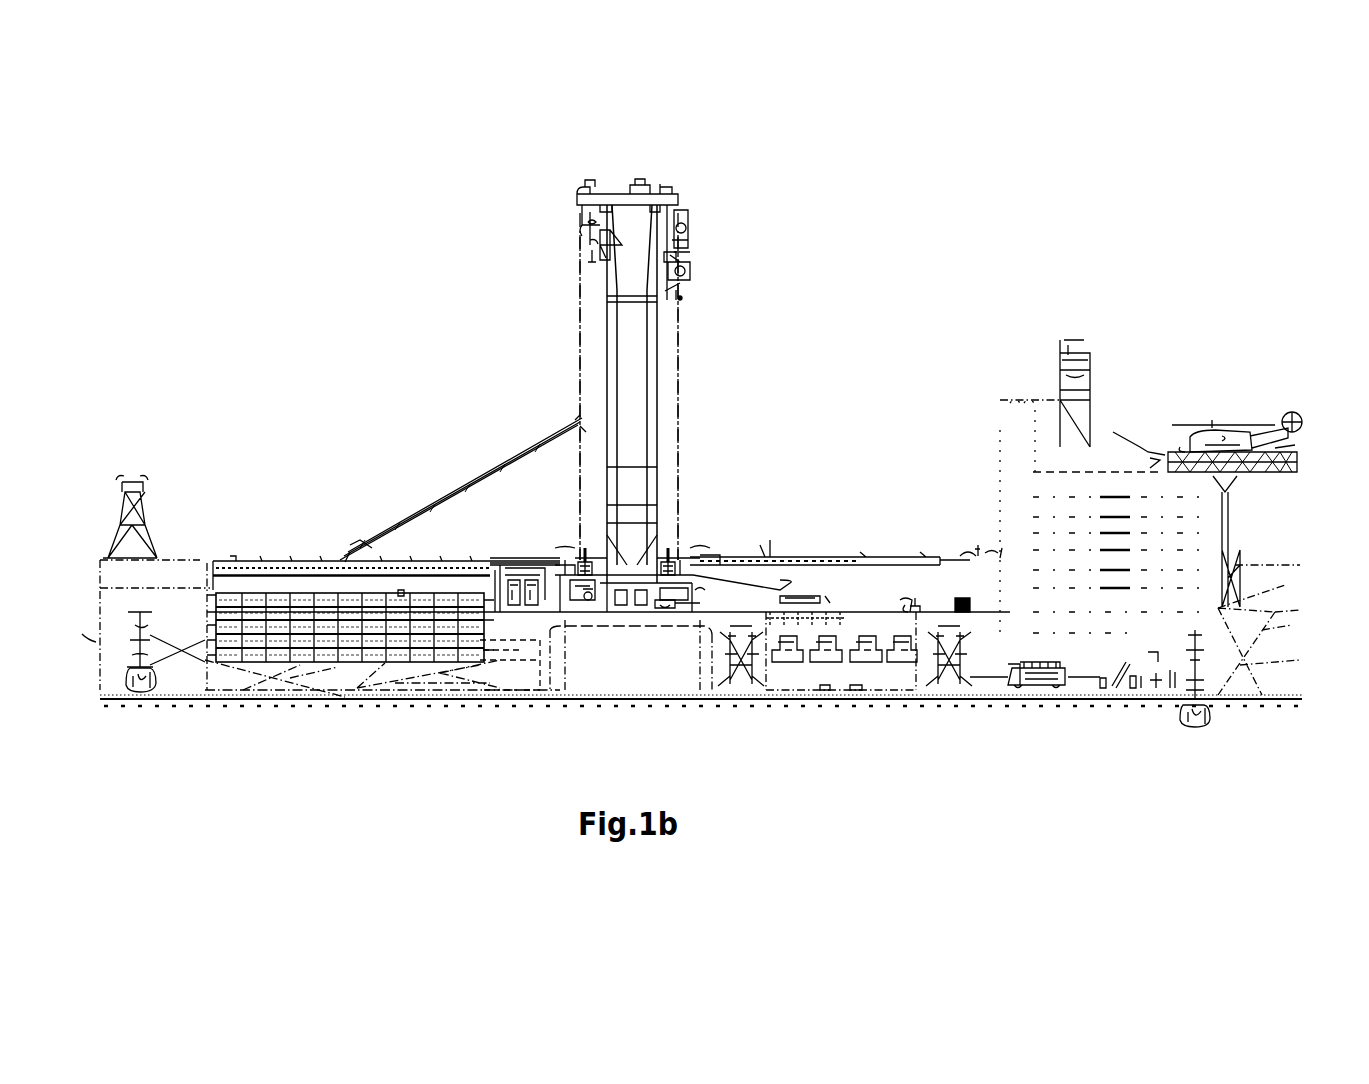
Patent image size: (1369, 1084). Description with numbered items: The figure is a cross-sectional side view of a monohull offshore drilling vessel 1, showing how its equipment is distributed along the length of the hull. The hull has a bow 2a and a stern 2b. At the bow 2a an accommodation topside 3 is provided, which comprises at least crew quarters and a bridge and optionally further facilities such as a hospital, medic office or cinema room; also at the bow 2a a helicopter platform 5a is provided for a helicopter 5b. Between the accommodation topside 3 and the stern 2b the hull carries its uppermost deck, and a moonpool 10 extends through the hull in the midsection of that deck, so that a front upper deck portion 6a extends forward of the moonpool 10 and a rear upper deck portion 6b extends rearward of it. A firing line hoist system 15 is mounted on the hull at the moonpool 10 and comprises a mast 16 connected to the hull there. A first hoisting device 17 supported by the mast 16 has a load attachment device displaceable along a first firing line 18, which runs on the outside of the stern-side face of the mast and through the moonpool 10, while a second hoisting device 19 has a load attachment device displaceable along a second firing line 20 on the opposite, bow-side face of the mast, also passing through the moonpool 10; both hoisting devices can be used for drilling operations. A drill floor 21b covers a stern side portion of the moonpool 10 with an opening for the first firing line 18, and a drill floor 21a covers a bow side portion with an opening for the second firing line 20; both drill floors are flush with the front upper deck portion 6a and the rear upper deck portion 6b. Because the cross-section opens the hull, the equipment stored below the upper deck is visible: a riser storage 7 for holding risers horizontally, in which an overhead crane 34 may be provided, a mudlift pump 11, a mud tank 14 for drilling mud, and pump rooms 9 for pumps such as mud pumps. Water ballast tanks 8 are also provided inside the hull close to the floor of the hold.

The monohull offshore drilling vessel 1 is at (449, 376).
The bow 2a is at (1286, 530).
The stern 2b is at (102, 678).
The accommodation topside 3 is at (1090, 460).
The helicopter platform 5a is at (1276, 455).
The helicopter 5b is at (1212, 452).
The front upper deck portion 6a is at (823, 557).
The rear upper deck portion 6b is at (258, 561).
The riser storage 7 is at (260, 640).
The water ballast tanks 8 is at (338, 680).
The pump rooms 9 is at (878, 675).
The moonpool 10 is at (596, 655).
The mudlift pump 11 is at (546, 598).
The mud tank 14 is at (740, 680).
The firing line hoist system 15 is at (705, 459).
The mast 16 is at (629, 391).
The first hoisting device 17 is at (548, 204).
The first firing line 18 is at (580, 318).
The second hoisting device 19 is at (699, 253).
The second firing line 20 is at (678, 318).
The drill floor 21a is at (586, 551).
The drill floor 21b is at (690, 560).
The overhead crane 34 is at (400, 592).